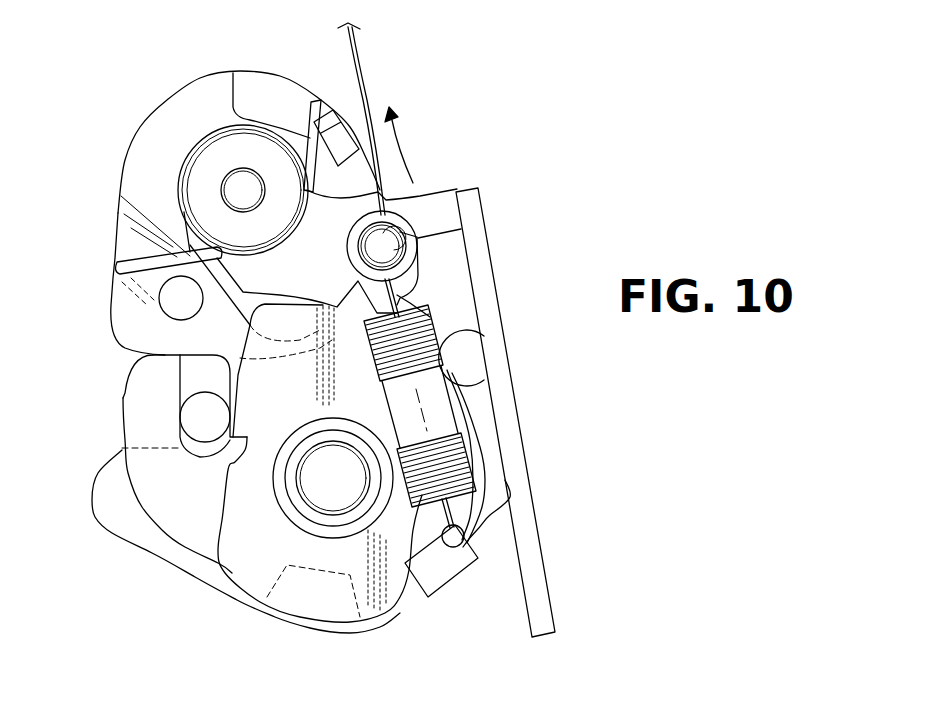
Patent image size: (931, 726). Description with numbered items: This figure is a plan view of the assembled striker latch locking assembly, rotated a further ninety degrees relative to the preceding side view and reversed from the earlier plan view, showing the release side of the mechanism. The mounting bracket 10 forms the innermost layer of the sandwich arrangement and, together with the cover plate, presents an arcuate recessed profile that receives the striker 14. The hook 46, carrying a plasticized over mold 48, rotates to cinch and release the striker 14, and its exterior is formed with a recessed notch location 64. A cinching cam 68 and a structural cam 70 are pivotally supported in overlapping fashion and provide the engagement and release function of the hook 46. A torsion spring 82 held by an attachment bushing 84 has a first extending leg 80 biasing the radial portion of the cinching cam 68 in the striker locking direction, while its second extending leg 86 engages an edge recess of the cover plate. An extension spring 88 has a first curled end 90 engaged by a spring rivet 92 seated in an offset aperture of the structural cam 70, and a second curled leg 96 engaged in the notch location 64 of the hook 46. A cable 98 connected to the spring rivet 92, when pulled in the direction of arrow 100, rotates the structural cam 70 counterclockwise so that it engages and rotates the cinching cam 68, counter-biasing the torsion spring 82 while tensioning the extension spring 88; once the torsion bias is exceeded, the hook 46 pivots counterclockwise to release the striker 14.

The mounting bracket 10 is at (175, 117).
The striker 14 is at (195, 412).
The hook 46 is at (137, 410).
The plasticized over mold 48 is at (247, 568).
The recessed notch location 64 is at (447, 557).
The cinching cam 68 is at (227, 290).
The structural cam 70 is at (328, 273).
The first extending leg 80 is at (302, 102).
The torsion spring 82 is at (217, 123).
The attachment bushing 84 is at (203, 177).
The second extending leg 86 is at (118, 270).
The extension spring 88 is at (447, 410).
The first curled end 90 is at (423, 300).
The spring rivet 92 is at (417, 237).
The second curled leg 96 is at (505, 500).
The cable 98 is at (363, 60).
The arrow 100 is at (403, 147).